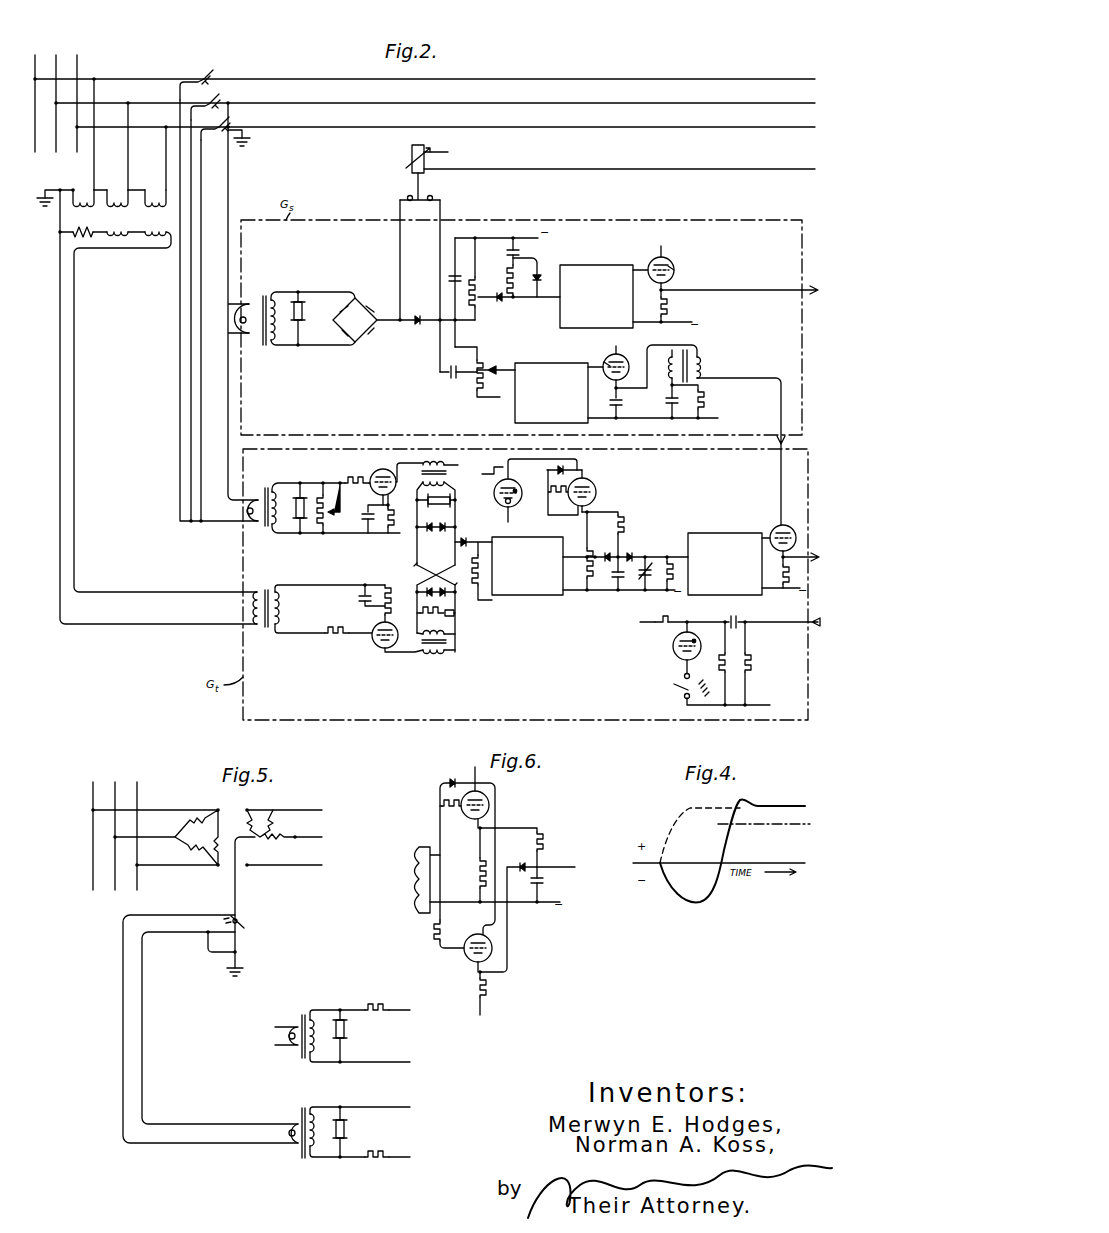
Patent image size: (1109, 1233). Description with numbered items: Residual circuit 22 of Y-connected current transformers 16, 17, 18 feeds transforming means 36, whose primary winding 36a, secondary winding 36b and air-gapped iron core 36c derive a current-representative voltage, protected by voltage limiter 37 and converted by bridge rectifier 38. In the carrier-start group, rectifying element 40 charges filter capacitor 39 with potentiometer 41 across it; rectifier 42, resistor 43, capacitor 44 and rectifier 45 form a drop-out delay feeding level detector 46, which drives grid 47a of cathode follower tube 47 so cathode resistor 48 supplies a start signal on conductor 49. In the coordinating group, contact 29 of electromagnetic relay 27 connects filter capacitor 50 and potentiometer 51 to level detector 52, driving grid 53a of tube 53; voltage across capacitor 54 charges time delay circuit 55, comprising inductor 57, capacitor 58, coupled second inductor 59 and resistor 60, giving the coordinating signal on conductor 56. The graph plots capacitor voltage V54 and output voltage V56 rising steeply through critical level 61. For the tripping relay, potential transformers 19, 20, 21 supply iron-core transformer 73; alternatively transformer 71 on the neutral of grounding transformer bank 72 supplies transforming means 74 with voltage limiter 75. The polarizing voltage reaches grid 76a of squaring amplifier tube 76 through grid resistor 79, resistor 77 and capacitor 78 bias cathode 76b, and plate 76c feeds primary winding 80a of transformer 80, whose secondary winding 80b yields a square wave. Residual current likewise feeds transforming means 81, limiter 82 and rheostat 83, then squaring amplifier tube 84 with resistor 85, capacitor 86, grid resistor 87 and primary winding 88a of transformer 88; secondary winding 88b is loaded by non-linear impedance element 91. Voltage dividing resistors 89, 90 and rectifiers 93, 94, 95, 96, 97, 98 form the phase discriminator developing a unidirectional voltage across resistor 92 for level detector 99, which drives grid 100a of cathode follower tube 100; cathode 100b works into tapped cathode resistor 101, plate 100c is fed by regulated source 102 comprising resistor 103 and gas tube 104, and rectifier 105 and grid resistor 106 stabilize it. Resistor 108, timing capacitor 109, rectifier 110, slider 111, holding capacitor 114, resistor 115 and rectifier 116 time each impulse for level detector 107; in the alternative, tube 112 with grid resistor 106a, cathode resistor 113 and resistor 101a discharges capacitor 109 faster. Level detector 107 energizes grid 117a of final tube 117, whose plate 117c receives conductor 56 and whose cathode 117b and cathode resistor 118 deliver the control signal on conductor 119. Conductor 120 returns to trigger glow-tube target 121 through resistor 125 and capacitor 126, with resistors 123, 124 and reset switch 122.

In FIG. 2, the current transformer 16 is at (214, 72).
In FIG. 2, the current transformer 17 is at (222, 98).
In FIG. 2, the current transformer 18 is at (230, 122).
In FIG. 2, the potential transformer 19 is at (79, 213).
In FIG. 2, the potential transformer 20 is at (115, 213).
In FIG. 2, the potential transformer 21 is at (153, 213).
In FIG. 2, the residual circuit 22 is at (230, 185).
In FIG. 2, the electromagnetic relay 27 is at (411, 158).
In FIG. 2, the contact 29 is at (400, 203).
In FIG. 2, the transforming means 36 is at (244, 319).
In FIG. 2, the primary winding 36a is at (240, 320).
In FIG. 2, the secondary winding 36b is at (272, 343).
In FIG. 2, the iron core 36c is at (252, 331).
In FIG. 2, the voltage limiter 37 is at (304, 312).
In FIG. 2, the full wave bridge type rectifier 38 is at (366, 300).
In FIG. 2, the filter capacitor 39 is at (450, 278).
In FIG. 2, the rectifying element 40 is at (418, 325).
In FIG. 2, the potentiometer 41 is at (481, 306).
In FIG. 2, the rectifier 42 is at (509, 286).
In FIG. 2, the resistor 43 is at (518, 299).
In FIG. 2, the capacitor 44 is at (510, 246).
In FIG. 2, the rectifier 45 is at (540, 271).
In FIG. 2, the level detector 46 is at (597, 265).
In FIG. 2, the cathode follower vacuum tube 47 is at (653, 259).
In FIG. 2, the control grid 47a is at (671, 263).
In FIG. 2, the cathode resistor 48 is at (668, 306).
In FIG. 2, the conductor 49 is at (764, 290).
In FIG. 2, the filter capacitor 50 is at (447, 373).
In FIG. 2, the potentiometer 51 is at (484, 362).
In FIG. 2, the level detector 52 is at (550, 363).
In FIG. 2, the cathode follower vacuum tube 53 is at (628, 360).
In FIG. 2, the control grid 53a is at (608, 361).
In FIG. 2, the capacitor 54 is at (610, 401).
In FIG. 2, the time delay circuit 55 is at (659, 423).
In FIG. 2, the conductor 56 is at (779, 412).
In FIG. 2, the inductor 57 is at (667, 372).
In FIG. 2, the capacitor 58 is at (668, 402).
In FIG. 2, the second inductor 59 is at (673, 366).
In FIG. 2, the resistor 60 is at (706, 401).
In FIG. 4, the critical voltage level line 61 is at (764, 825).
In FIG. 5, the transformer 71 is at (247, 923).
In FIG. 5, the grounding transformer bank 72 is at (248, 828).
In FIG. 2, the iron-core transformer 73 is at (266, 598).
In FIG. 5, the transforming means 74 is at (301, 1123).
In FIG. 5, the voltage limiter 75 is at (348, 1129).
In FIG. 2, the high-mu triode vacuum tube 76 is at (395, 627).
In FIG. 2, the grid 76a is at (374, 638).
In FIG. 2, the cathode 76b is at (375, 630).
In FIG. 2, the plate 76c is at (383, 649).
In FIG. 2, the resistor 77 is at (390, 585).
In FIG. 2, the capacitor 78 is at (361, 598).
In FIG. 2, the grid resistor 79 is at (328, 631).
In FIG. 5, the grid resistor 79 is at (380, 1162).
In FIG. 2, the iron core transformer 80 is at (432, 647).
In FIG. 2, the primary winding 80a is at (445, 655).
In FIG. 2, the secondary winding 80b is at (427, 641).
In FIG. 2, the transforming means 81 is at (261, 498).
In FIG. 5, the transforming means 81 is at (294, 1025).
In FIG. 2, the voltage limiter 82 is at (298, 530).
In FIG. 5, the voltage limiter 82 is at (348, 1031).
In FIG. 2, the rheostat 83 is at (322, 483).
In FIG. 2, the high-mu triode vacuum tube 84 is at (380, 470).
In FIG. 2, the resistor 85 is at (386, 530).
In FIG. 2, the capacitor 86 is at (362, 516).
In FIG. 2, the grid resistor 87 is at (357, 477).
In FIG. 5, the grid resistor 87 is at (376, 1004).
In FIG. 2, the transformer 88 is at (441, 493).
In FIG. 2, the primary winding 88a is at (440, 461).
In FIG. 2, the secondary winding 88b is at (447, 484).
In FIG. 2, the voltage dividing resistor 89 is at (456, 613).
In FIG. 2, the voltage dividing resistor 90 is at (420, 612).
In FIG. 2, the impedance element 91 is at (417, 500).
In FIG. 2, the resistor 92 is at (481, 541).
In FIG. 2, the rectifier 93 is at (444, 590).
In FIG. 2, the rectifier 94 is at (423, 590).
In FIG. 2, the rectifier 95 is at (449, 524).
In FIG. 2, the rectifier 96 is at (422, 527).
In FIG. 2, the rectifier 97 is at (457, 584).
In FIG. 2, the rectifier 98 is at (415, 567).
In FIG. 2, the level detector 99 is at (528, 595).
In FIG. 6, the level detector 99 is at (417, 880).
In FIG. 2, the cathode follower vacuum tube 100 is at (595, 500).
In FIG. 6, the cathode follower vacuum tube 100 is at (490, 805).
In FIG. 2, the control grid 100a is at (597, 490).
In FIG. 2, the cathode 100b is at (576, 507).
In FIG. 2, the plate 100c is at (592, 480).
In FIG. 2, the tapped cathode resistor 101 is at (585, 588).
In FIG. 6, the resistor 101a is at (481, 862).
In FIG. 2, the source of regulated positive potential 102 is at (535, 494).
In FIG. 2, the resistor 103 is at (493, 466).
In FIG. 2, the voltage regulating gas tube 104 is at (512, 508).
In FIG. 2, the rectifier 105 is at (572, 461).
In FIG. 6, the rectifier 105 is at (454, 775).
In FIG. 2, the grid resistor 106 is at (549, 492).
In FIG. 6, the grid resistor 106 is at (445, 809).
In FIG. 6, the grid resistor 106a is at (438, 929).
In FIG. 2, the level detector 107 is at (731, 533).
In FIG. 2, the resistor 108 is at (626, 523).
In FIG. 6, the resistor 108 is at (545, 842).
In FIG. 2, the timing capacitor 109 is at (618, 582).
In FIG. 6, the timing capacitor 109 is at (546, 881).
In FIG. 2, the rectifier 110 is at (604, 552).
In FIG. 6, the rectifier 110 is at (520, 857).
In FIG. 2, the adjustable slider 111 is at (595, 560).
In FIG. 6, the cathode follower vacuum tube 112 is at (470, 959).
In FIG. 6, the cathode resistor 113 is at (488, 990).
In FIG. 2, the variable holding capacitor 114 is at (648, 582).
In FIG. 2, the resistor 115 is at (667, 556).
In FIG. 2, the rectifier 116 is at (635, 552).
In FIG. 2, the final cathode follower vacuum tube 117 is at (785, 533).
In FIG. 2, the control grid 117a is at (772, 536).
In FIG. 2, the cathode 117b is at (803, 551).
In FIG. 2, the plate 117c is at (777, 530).
In FIG. 2, the cathode resistor 118 is at (786, 590).
In FIG. 2, the conductor 119 is at (793, 566).
In FIG. 2, the conductor 120 is at (800, 624).
In FIG. 2, the glow discharge tube 121 is at (676, 651).
In FIG. 2, the push button reset switch 122 is at (667, 690).
In FIG. 2, the resistor 123 is at (723, 646).
In FIG. 2, the resistor 124 is at (660, 624).
In FIG. 2, the resistor 125 is at (752, 665).
In FIG. 2, the capacitor 126 is at (729, 615).
In FIG. 4, the capacitor voltage curve V54 is at (670, 831).
In FIG. 4, the output voltage curve V56 is at (727, 854).